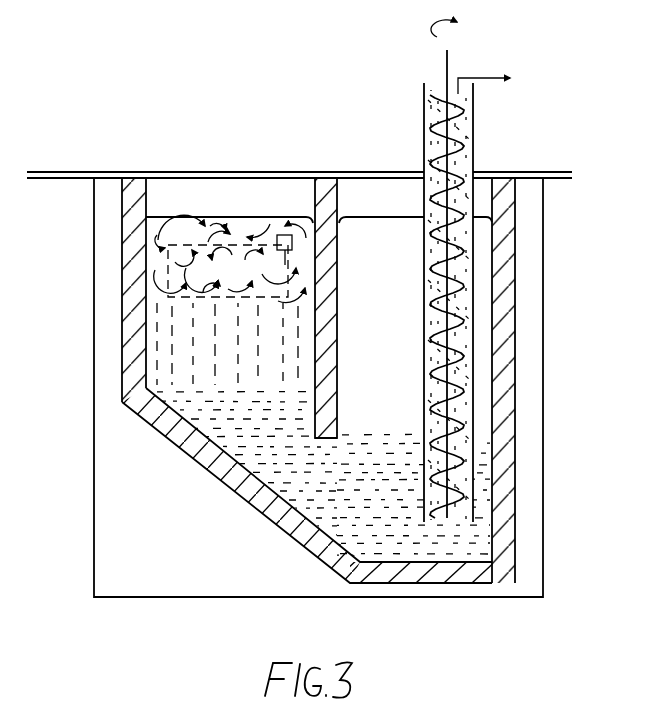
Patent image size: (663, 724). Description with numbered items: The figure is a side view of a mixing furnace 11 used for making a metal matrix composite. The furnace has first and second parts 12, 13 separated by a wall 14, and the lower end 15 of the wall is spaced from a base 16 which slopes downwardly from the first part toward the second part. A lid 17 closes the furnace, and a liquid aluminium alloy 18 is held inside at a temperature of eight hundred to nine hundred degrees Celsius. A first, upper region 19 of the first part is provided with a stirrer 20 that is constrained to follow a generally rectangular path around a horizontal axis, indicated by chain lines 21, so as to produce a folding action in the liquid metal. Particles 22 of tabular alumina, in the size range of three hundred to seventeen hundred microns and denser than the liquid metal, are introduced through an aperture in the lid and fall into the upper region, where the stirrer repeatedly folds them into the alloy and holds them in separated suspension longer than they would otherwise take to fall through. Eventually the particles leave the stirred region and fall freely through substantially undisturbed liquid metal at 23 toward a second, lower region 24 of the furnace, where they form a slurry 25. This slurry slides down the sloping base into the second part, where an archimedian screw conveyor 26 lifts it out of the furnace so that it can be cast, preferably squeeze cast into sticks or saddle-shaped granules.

The mixing furnace 11 is at (93, 566).
The first part 12 is at (130, 345).
The second part 13 is at (512, 322).
The wall 14 is at (337, 310).
The lower end 15 is at (327, 408).
The base 16 is at (290, 522).
The lid 17 is at (163, 171).
The liquid aluminium alloy 18 is at (380, 220).
The first region 19 is at (168, 264).
The stirrer 20 is at (292, 243).
The chain lines 21 is at (237, 246).
The particles 22 is at (215, 235).
The substantially undisturbed liquid metal 23 is at (213, 345).
The second region 24 is at (233, 423).
The slurry 25 is at (327, 460).
The archimedian screw conveyor 26 is at (472, 425).